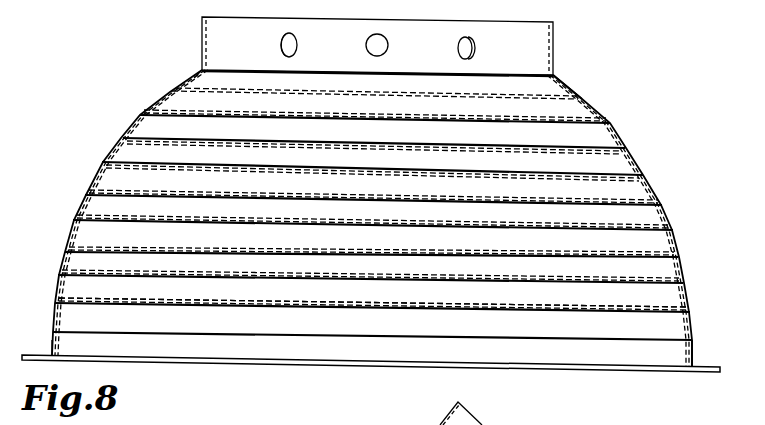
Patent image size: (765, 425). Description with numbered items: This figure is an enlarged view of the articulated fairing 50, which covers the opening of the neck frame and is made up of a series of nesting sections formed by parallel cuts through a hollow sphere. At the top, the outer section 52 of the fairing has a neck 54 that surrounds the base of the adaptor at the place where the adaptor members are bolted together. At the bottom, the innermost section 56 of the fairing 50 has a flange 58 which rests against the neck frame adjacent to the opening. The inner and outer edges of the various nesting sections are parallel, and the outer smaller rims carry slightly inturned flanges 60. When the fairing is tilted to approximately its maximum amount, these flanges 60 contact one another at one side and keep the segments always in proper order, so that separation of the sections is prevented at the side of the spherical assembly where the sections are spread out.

The articulated fairing 50 is at (660, 177).
The outer section 52 is at (563, 88).
The neck 54 is at (555, 38).
The innermost section 56 is at (686, 355).
The flange 58 is at (707, 363).
The inturned flanges 60 is at (298, 303).